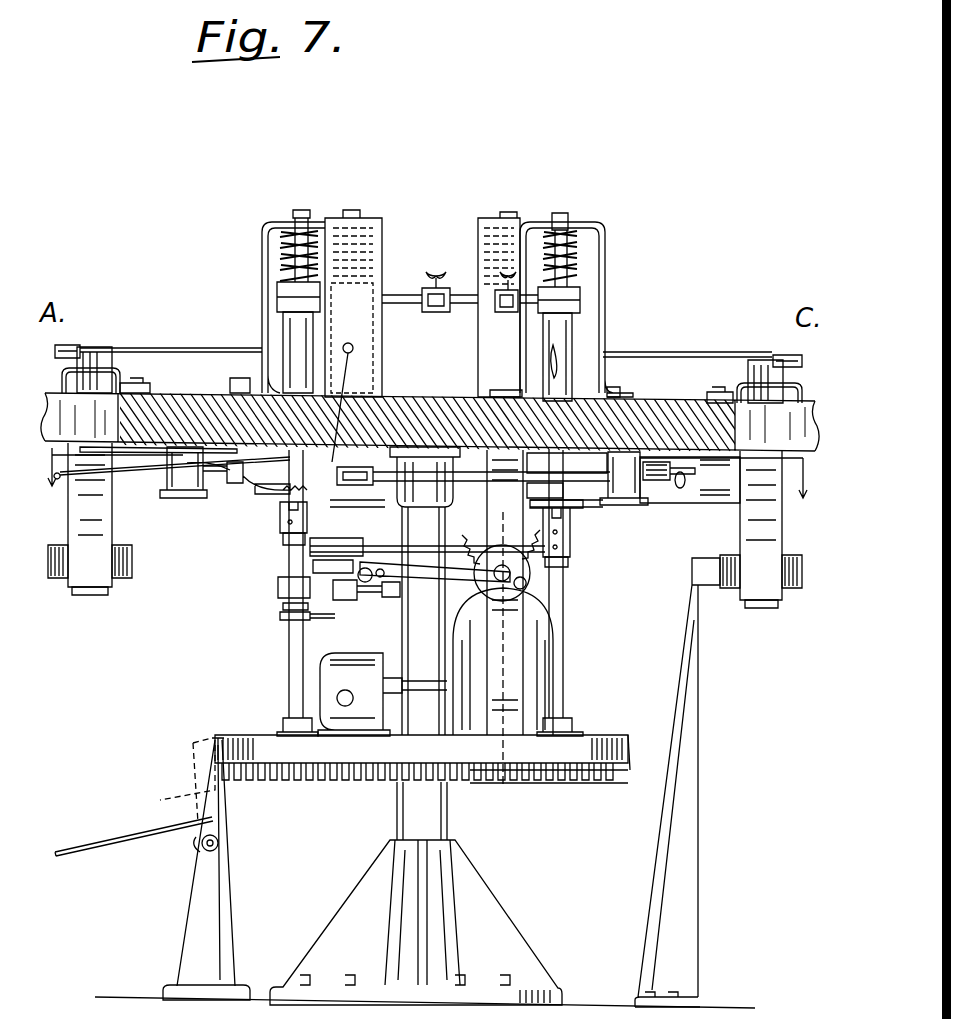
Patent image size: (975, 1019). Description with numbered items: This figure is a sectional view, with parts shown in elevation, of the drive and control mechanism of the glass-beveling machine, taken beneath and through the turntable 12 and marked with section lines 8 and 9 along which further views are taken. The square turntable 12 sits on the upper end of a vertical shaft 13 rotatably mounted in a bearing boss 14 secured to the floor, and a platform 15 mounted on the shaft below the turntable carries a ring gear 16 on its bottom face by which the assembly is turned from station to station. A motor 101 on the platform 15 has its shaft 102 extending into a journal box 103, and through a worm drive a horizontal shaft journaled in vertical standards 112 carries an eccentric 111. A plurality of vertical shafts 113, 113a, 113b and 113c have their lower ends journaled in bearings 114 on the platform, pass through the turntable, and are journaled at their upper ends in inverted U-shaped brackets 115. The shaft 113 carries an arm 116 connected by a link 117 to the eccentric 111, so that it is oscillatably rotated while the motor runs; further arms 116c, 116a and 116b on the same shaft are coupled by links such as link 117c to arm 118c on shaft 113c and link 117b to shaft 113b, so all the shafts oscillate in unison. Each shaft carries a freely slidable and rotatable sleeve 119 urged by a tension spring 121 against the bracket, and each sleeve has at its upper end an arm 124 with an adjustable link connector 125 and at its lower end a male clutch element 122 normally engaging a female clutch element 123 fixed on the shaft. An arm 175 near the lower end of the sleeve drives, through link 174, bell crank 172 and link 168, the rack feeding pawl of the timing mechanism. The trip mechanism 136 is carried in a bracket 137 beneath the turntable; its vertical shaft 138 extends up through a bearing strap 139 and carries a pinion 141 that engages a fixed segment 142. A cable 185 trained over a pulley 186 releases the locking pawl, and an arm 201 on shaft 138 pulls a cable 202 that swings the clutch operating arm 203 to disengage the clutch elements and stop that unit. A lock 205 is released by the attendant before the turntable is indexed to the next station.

The section line 8- 8 is at (427, 473).
The section line 9- 9 is at (513, 793).
The turntable 12 is at (405, 402).
The vertical shaft 13 is at (397, 815).
The bearing boss 14 is at (495, 942).
The platform 15 is at (622, 768).
The ring gear 16 is at (575, 778).
The motor 101 is at (313, 680).
The motor shaft 102 is at (383, 768).
The journal box 103 is at (557, 668).
The eccentric 111 is at (530, 575).
The vertical standards 112 is at (465, 765).
The vertical shaft 113 is at (355, 210).
The vertical shaft 113a is at (300, 210).
The vertical shaft 113b is at (505, 212).
The vertical shaft 113c is at (560, 212).
The bearings 114 is at (287, 720).
The inverted U-shaped bracket 115 is at (327, 258).
The arm 116 is at (283, 597).
The arm 116a is at (307, 603).
The arm 116b is at (323, 627).
The arm 116c is at (305, 560).
The link 117 is at (473, 587).
The link 117b is at (350, 643).
The link 117c is at (437, 547).
The arm 118c is at (563, 567).
The sleeve 119 is at (288, 333).
The tension spring 121 is at (290, 240).
The male clutch element 122 is at (287, 500).
The female clutch element 123 is at (290, 533).
The arm 124 is at (285, 297).
The link connector 125 is at (437, 276).
The trip mechanism 136 is at (100, 597).
The bracket 137 is at (107, 592).
The vertical shaft 138 is at (97, 383).
The bearing strap 139 is at (95, 373).
The pinion 141 is at (45, 565).
The segment 142 is at (703, 573).
The link 168 is at (135, 447).
The bell crank 172 is at (178, 493).
The link 174 is at (443, 445).
The arm 175 is at (378, 410).
The cable 185 is at (128, 470).
The pulley 186 is at (690, 470).
The arm 201 is at (70, 348).
The cable 202 is at (140, 350).
The clutch operating arm 203 is at (285, 491).
The lock 205 is at (162, 797).